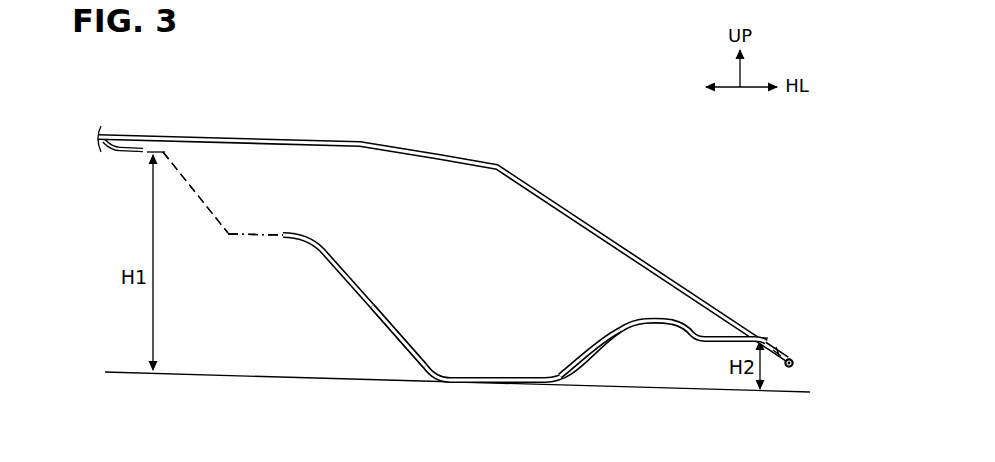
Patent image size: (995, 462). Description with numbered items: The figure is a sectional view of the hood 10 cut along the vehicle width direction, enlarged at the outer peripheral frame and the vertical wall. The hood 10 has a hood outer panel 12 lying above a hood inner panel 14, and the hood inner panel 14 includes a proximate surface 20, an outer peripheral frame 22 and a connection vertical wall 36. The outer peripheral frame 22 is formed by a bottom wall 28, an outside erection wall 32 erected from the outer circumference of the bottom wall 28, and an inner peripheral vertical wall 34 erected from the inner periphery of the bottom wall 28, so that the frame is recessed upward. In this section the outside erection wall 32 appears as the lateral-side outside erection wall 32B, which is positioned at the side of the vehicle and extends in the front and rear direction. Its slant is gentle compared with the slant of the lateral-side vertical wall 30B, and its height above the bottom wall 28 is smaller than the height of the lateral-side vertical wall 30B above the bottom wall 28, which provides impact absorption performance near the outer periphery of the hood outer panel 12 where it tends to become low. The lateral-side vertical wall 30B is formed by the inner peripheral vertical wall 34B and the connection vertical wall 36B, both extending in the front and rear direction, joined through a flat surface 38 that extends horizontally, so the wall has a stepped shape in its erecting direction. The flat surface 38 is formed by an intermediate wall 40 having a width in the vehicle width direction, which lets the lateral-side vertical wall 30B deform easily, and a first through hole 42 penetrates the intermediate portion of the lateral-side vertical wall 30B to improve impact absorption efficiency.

The hood 10 is at (445, 245).
The hood outer panel 12 is at (360, 146).
The hood inner panel 14 is at (524, 317).
The proximate surface 20 is at (120, 134).
The outer peripheral frame 22 is at (657, 318).
The bottom wall 28 is at (486, 375).
The lateral-side vertical wall 30B is at (352, 272).
The outside erection wall 32 is at (590, 353).
The lateral-side outside erection wall 32B is at (617, 330).
The inner peripheral vertical wall 34 is at (398, 336).
The inner peripheral vertical wall 34B is at (372, 300).
The connection vertical wall 36 is at (195, 192).
The connection vertical wall 36B is at (189, 183).
The flat surface 38 is at (263, 233).
The intermediate wall 40 is at (255, 234).
The first through hole 42 is at (242, 236).